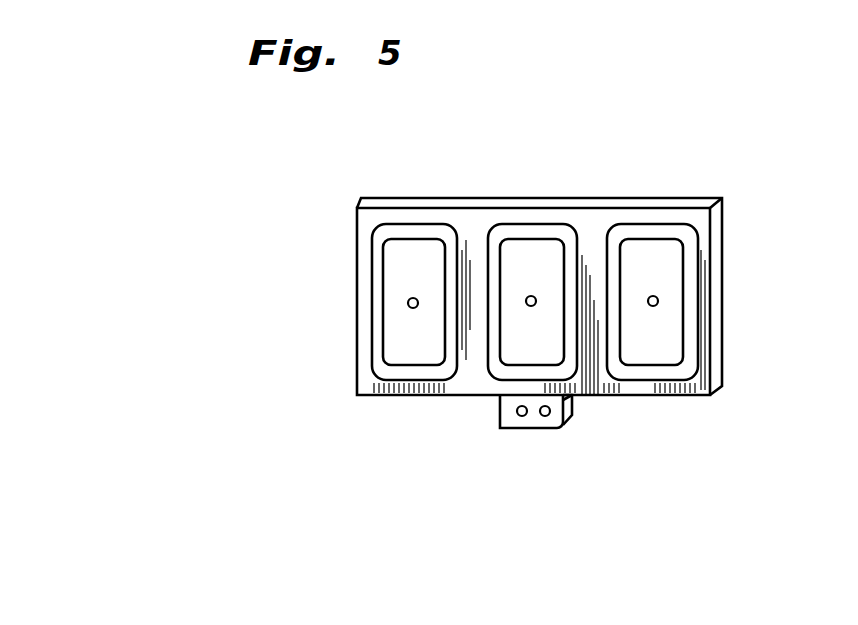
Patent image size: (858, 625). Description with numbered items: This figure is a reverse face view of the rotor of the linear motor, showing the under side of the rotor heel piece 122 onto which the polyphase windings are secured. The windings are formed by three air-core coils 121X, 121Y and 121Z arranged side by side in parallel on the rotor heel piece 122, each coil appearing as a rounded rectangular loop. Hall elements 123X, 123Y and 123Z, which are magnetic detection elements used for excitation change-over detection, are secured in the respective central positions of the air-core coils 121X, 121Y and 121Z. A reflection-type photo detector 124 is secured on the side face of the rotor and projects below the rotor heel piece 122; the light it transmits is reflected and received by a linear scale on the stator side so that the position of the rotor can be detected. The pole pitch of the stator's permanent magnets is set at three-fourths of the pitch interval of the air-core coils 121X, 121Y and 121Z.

The air-core coil 121X is at (411, 224).
The air-core coil 121Y is at (538, 224).
The air-core coil 121Z is at (660, 224).
The rotor heel piece 122 is at (702, 233).
The hall element 123X is at (408, 303).
The hall element 123Y is at (529, 306).
The hall element 123Z is at (658, 301).
The photo detector 124 is at (553, 413).